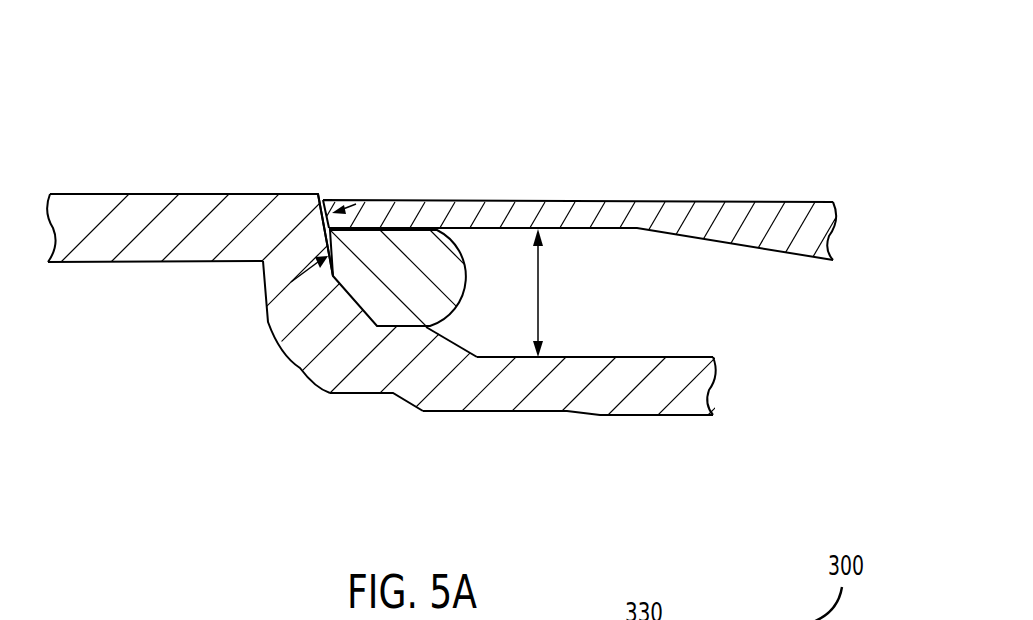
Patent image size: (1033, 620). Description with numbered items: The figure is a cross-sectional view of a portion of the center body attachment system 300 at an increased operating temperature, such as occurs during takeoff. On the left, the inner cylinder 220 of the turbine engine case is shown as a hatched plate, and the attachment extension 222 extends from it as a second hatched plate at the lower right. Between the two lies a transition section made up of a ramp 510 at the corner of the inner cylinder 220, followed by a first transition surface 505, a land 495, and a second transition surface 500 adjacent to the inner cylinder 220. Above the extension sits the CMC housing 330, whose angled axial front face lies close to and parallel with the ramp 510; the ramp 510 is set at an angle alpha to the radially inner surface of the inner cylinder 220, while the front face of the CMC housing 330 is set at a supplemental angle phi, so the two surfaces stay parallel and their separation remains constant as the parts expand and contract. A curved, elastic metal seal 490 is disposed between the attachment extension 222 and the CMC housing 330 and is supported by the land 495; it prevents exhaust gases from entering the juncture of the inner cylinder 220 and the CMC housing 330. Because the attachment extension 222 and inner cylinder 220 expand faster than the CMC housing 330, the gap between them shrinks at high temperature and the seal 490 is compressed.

The center body attachment system 300 is at (736, 98).
The ramp 510 is at (326, 180).
The CMC housing 330 is at (520, 200).
The inner cylinder 220 is at (190, 263).
The first transition surface 505 is at (347, 288).
The seal 490 is at (380, 292).
The land 495 is at (404, 330).
The second transition surface 500 is at (426, 328).
The attachment extension 222 is at (680, 415).